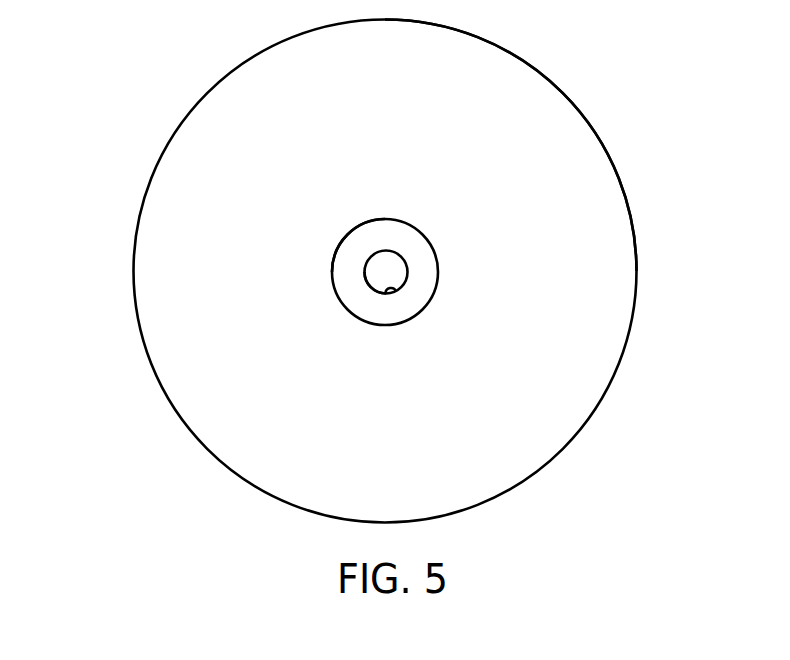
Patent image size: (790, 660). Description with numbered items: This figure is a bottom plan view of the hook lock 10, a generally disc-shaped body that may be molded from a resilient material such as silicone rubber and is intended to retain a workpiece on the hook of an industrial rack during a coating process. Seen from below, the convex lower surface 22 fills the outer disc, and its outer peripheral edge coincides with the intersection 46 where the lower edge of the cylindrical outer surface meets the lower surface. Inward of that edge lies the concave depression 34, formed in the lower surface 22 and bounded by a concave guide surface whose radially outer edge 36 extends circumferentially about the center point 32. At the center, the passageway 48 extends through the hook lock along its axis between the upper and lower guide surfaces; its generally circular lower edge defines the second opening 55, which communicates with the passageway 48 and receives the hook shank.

The hook lock 10 is at (147, 378).
The convex lower surface 22 is at (276, 174).
The center point 32 is at (386, 270).
The concave depression 34 is at (347, 258).
The radially outer edge 36 is at (438, 265).
The intersection 46 is at (563, 92).
The passageway 48 is at (365, 285).
The second opening 55 is at (392, 288).